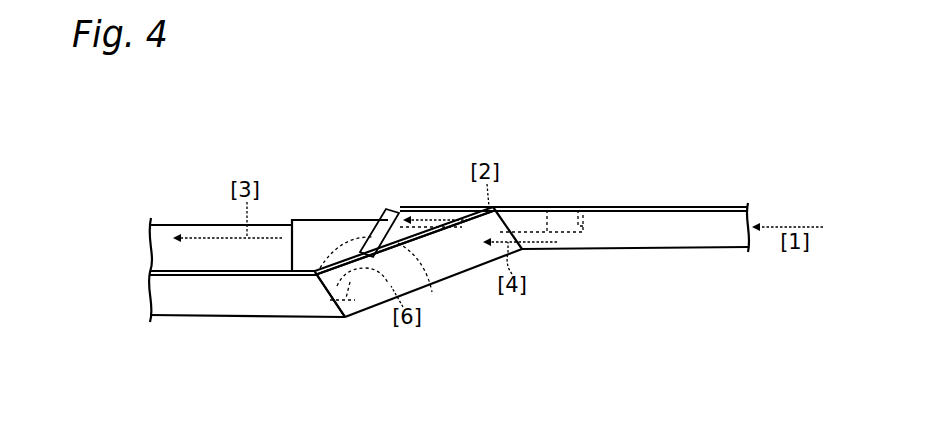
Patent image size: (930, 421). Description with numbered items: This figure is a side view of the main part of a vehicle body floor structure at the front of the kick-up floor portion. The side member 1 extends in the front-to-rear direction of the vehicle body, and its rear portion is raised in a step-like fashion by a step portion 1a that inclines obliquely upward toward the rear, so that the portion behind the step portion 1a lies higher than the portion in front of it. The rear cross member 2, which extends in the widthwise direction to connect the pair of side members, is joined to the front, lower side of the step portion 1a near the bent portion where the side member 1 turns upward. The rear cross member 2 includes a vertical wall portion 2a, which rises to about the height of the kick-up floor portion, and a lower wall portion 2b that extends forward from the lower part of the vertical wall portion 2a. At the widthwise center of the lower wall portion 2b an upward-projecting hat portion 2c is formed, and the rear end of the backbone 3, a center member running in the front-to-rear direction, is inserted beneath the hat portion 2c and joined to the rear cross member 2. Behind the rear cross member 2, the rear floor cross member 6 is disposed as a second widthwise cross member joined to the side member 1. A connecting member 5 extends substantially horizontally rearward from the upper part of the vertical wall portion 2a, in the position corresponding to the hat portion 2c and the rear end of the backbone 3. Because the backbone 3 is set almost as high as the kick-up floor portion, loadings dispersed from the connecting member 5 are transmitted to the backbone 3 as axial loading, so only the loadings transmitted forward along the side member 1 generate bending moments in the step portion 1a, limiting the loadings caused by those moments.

The side member 1 is at (628, 249).
The step portion 1a is at (345, 317).
The rear cross member 2 is at (366, 206).
The vertical wall portion 2a is at (407, 238).
The lower wall portion 2b is at (313, 277).
The hat portion 2c is at (305, 220).
The backbone 3 is at (210, 225).
The connecting member 5 is at (447, 221).
The rear floor cross member 6 is at (562, 233).